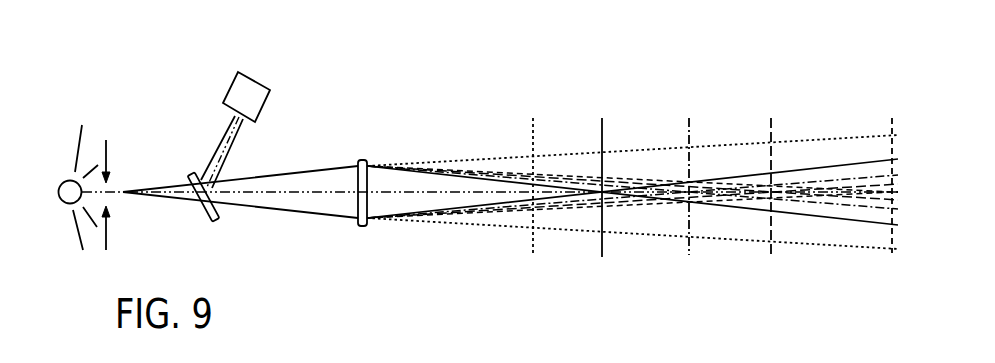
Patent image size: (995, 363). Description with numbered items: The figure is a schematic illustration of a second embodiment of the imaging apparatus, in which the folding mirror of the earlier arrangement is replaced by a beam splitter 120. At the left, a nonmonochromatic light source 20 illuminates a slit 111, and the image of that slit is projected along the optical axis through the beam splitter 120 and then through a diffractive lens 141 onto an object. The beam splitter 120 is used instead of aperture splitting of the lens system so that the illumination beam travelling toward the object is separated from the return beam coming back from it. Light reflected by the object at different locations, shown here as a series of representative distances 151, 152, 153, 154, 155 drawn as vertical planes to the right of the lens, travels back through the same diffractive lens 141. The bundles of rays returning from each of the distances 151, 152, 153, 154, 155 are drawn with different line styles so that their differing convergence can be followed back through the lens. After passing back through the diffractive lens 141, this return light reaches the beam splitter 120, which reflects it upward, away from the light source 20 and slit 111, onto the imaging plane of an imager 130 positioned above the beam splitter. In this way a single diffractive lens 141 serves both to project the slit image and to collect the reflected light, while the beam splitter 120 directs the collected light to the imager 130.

The nonmonochromatic light source 20 is at (60, 206).
The slit 111 is at (108, 188).
The beam splitter 120 is at (214, 227).
The imager 130 is at (268, 88).
The diffractive lens 141 is at (360, 158).
The representative distance 151 is at (532, 138).
The representative distance 152 is at (601, 137).
The representative distance 153 is at (688, 132).
The representative distance 154 is at (770, 128).
The representative distance 155 is at (890, 122).